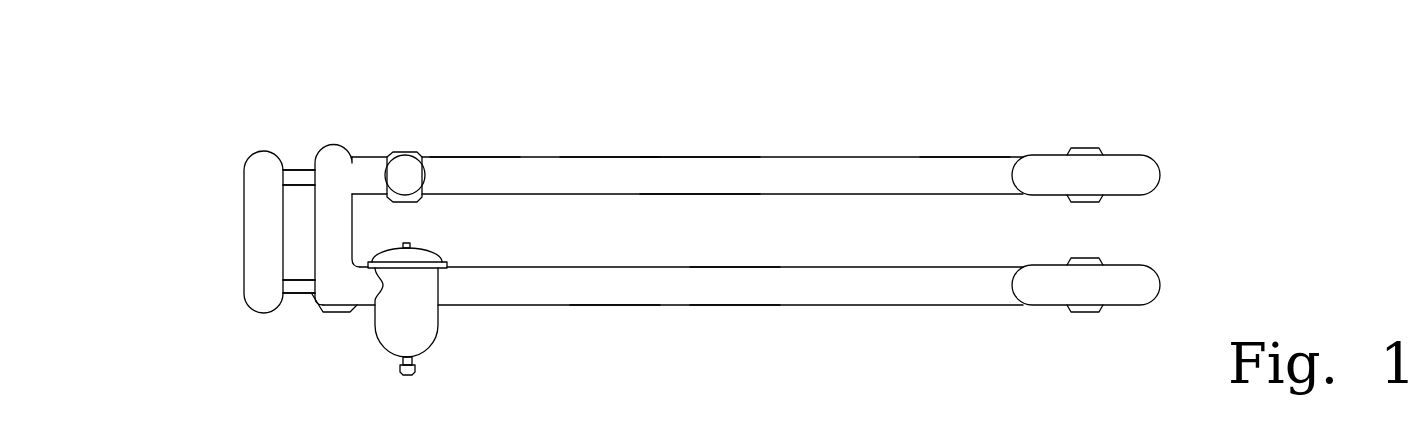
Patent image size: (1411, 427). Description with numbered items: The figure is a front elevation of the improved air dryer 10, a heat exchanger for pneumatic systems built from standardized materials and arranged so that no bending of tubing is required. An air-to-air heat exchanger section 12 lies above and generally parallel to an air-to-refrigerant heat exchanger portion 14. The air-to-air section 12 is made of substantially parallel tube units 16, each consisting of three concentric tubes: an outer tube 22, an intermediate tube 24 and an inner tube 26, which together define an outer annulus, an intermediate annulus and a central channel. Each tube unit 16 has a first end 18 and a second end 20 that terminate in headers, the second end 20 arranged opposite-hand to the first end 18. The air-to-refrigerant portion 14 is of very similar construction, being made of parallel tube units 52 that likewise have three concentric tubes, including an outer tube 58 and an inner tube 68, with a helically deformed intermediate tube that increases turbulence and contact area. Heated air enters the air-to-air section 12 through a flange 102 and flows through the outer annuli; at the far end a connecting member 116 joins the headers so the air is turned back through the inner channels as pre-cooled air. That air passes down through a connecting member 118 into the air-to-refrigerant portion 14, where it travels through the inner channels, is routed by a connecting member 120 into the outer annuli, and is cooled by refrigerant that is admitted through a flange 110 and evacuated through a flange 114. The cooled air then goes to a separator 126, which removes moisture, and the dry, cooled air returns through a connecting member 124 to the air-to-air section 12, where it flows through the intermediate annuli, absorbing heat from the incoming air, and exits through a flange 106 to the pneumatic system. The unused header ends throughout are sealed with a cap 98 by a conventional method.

The improved air dryer 10 is at (1290, 152).
The air-to-air heat exchanger section 12 is at (865, 155).
The air-to-refrigerant heat exchanger portion 14 is at (847, 305).
The tube units 16 is at (677, 178).
The first end 18 is at (462, 157).
The second end 20 is at (967, 156).
The outer tube 22 is at (606, 156).
The intermediate tube 24 is at (358, 163).
The inner tube 26 is at (293, 163).
The tube units 52 is at (733, 287).
The outer tube 58 is at (613, 305).
The inner tube 68 is at (288, 296).
The cap 98 is at (404, 170).
The flange 102 is at (403, 153).
The flange 106 is at (1077, 148).
The flange 110 is at (1080, 312).
The flange 114 is at (338, 312).
The connecting member 116 is at (1133, 173).
The connecting member 118 is at (263, 237).
The connecting member 120 is at (1098, 290).
The connecting member 124 is at (295, 167).
The separator 126 is at (432, 347).